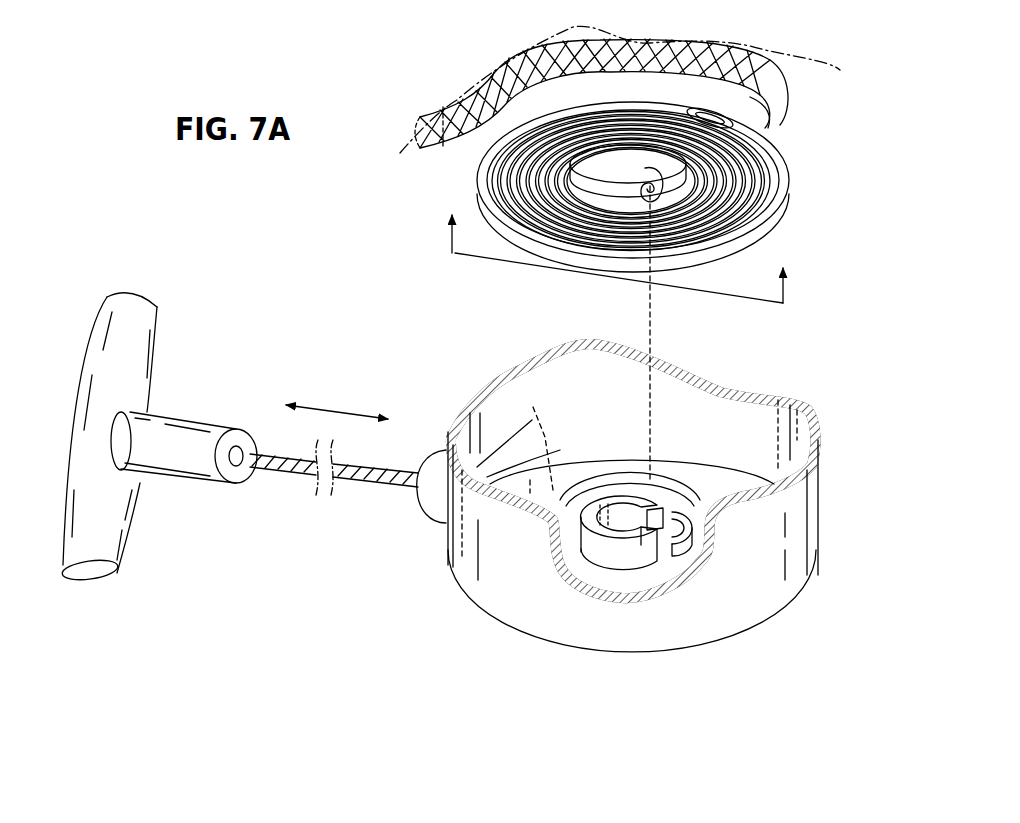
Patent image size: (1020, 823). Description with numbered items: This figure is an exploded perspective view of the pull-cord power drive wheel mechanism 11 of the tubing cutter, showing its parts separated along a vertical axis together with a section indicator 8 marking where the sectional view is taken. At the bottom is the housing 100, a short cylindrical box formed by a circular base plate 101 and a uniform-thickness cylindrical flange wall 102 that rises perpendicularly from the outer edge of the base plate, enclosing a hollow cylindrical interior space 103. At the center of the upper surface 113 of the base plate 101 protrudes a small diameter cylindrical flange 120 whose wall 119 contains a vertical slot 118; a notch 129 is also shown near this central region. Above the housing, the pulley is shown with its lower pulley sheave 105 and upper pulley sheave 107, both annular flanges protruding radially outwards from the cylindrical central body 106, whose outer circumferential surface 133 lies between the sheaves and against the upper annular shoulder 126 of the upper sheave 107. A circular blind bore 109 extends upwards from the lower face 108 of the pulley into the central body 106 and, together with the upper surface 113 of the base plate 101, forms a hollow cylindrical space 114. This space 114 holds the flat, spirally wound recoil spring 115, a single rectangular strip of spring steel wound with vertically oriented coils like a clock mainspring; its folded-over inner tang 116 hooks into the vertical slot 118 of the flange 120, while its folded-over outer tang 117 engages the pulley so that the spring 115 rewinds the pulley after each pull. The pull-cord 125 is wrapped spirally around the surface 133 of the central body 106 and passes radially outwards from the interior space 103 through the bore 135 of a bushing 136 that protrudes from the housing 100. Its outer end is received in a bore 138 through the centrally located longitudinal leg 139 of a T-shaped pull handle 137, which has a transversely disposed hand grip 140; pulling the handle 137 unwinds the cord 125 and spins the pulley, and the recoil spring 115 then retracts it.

The section line 8- 8 is at (617, 270).
The pull-cord power drive wheel mechanism 11 is at (468, 160).
The housing 100 is at (825, 520).
The base plate 101 is at (672, 652).
The flange wall 102 is at (735, 588).
The hollow interior space 103 is at (667, 405).
The lower pulley sheave 105 is at (788, 157).
The central body 106 is at (680, 183).
The upper pulley sheave 107 is at (788, 97).
The lower face 108 is at (497, 147).
The blind bore 109 is at (725, 212).
The upper surface 113 is at (543, 493).
The hollow cylindrically-shaped space 114 is at (590, 195).
The recoil spring 115 is at (757, 192).
The inner tang 116 is at (673, 578).
The outer tang 117 is at (717, 117).
The vertical slot 118 is at (645, 187).
The wall 119 is at (709, 188).
The cylindrical flange 120 is at (580, 660).
The pull-cord 125 is at (486, 125).
The upper annular ring-shaped shoulder 126 is at (777, 88).
The notch 129 is at (705, 488).
The outer circumferential surface 133 is at (497, 112).
The bore 135 is at (423, 478).
The bushing 136 is at (434, 513).
The T-shaped pull handle 137 is at (64, 437).
The bore 138 is at (247, 470).
The leg 139 is at (190, 420).
The hand grip 140 is at (97, 330).